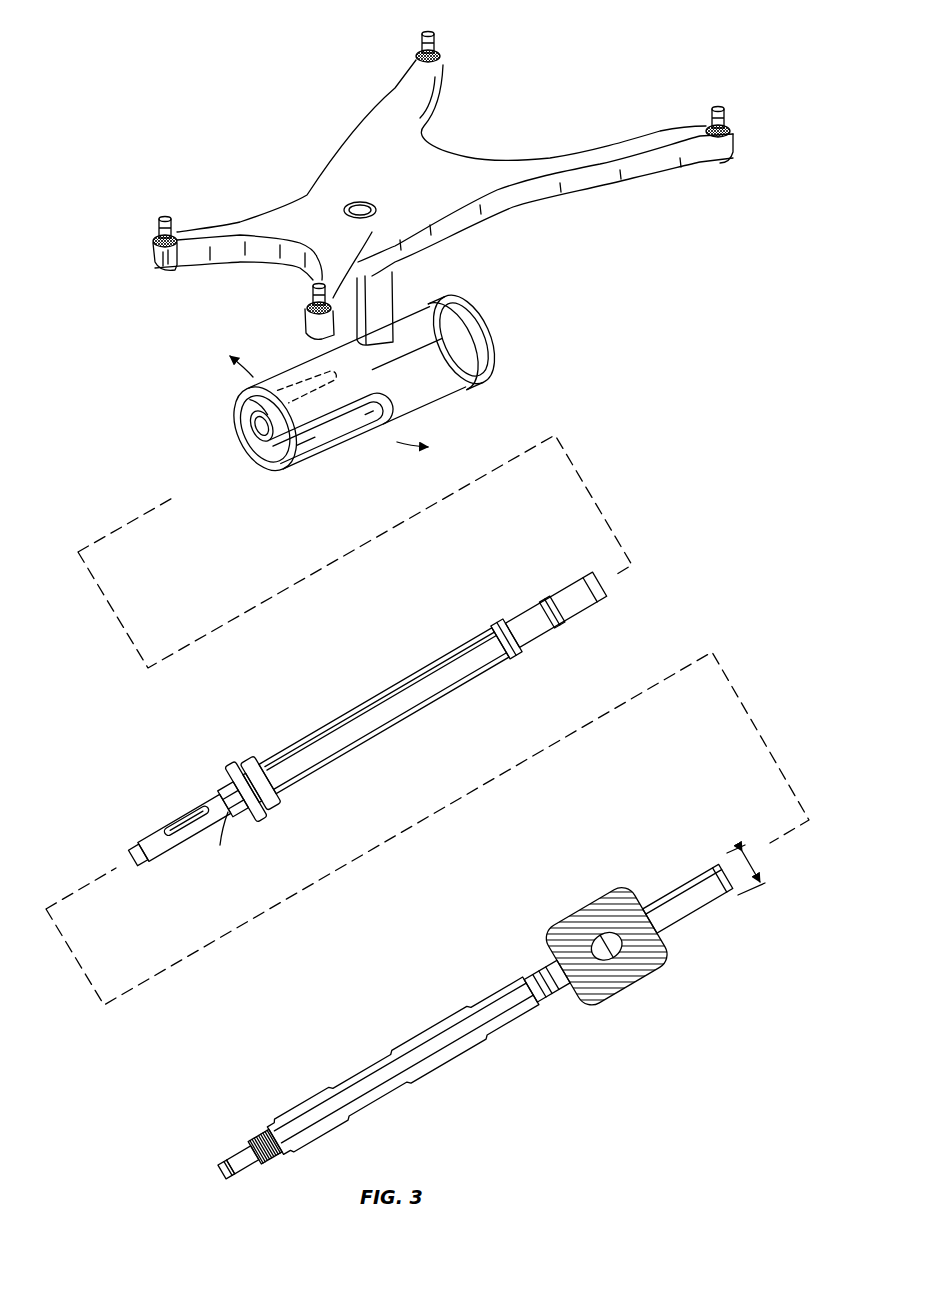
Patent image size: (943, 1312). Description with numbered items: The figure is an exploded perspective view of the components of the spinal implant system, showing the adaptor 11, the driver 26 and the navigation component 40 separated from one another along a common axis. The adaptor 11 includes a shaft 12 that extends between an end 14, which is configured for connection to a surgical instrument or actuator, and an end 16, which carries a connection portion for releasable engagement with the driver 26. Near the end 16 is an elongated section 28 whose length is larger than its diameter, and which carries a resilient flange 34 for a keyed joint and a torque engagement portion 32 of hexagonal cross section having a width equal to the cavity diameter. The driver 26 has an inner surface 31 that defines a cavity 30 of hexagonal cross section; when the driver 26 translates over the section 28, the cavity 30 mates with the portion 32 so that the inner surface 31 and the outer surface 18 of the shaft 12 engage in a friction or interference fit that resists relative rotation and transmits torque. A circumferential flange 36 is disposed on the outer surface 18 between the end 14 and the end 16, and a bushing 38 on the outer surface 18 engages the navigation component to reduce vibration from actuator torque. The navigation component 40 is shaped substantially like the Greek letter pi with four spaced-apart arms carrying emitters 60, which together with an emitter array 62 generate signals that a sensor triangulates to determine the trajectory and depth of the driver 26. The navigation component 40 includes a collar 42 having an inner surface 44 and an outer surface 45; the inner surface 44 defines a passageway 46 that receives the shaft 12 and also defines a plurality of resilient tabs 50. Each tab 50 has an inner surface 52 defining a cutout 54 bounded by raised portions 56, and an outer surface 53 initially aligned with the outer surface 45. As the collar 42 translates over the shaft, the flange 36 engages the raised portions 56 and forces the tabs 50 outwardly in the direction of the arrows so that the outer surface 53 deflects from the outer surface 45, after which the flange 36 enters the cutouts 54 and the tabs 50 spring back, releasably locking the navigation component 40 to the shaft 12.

The adaptor 11 is at (377, 652).
The shaft 12 is at (387, 720).
The end 14 is at (552, 622).
The end 16 is at (130, 840).
The outer surface 18 is at (433, 668).
The driver 26 is at (522, 1062).
The elongated section 28 is at (162, 853).
The cavity 30 is at (766, 884).
The inner surface 31 is at (738, 885).
The torque engagement portion 32 is at (223, 783).
The resilient flange 34 is at (180, 808).
The circumferential flange 36 is at (284, 797).
The bushing 38 is at (260, 823).
The navigation component 40 is at (592, 340).
The collar 42 is at (456, 409).
The inner surface 44 is at (247, 470).
The outer surface 45 is at (368, 440).
The passageway 46 is at (250, 452).
The resilient tab 50 is at (288, 372).
The inner surface 52 is at (250, 437).
The outer surface 53 is at (316, 441).
The cutout 54 is at (256, 432).
The raised portions 56 is at (255, 408).
The emitters 60 is at (156, 222).
The emitter array 62 is at (320, 192).